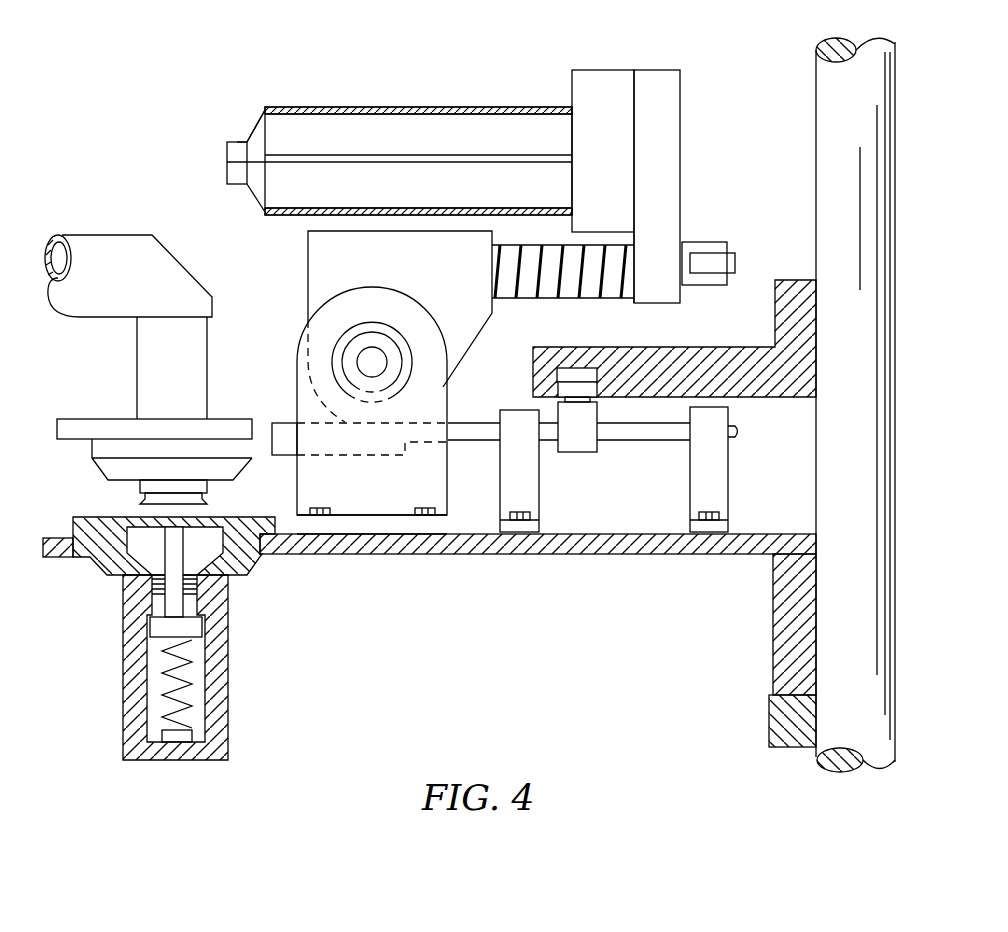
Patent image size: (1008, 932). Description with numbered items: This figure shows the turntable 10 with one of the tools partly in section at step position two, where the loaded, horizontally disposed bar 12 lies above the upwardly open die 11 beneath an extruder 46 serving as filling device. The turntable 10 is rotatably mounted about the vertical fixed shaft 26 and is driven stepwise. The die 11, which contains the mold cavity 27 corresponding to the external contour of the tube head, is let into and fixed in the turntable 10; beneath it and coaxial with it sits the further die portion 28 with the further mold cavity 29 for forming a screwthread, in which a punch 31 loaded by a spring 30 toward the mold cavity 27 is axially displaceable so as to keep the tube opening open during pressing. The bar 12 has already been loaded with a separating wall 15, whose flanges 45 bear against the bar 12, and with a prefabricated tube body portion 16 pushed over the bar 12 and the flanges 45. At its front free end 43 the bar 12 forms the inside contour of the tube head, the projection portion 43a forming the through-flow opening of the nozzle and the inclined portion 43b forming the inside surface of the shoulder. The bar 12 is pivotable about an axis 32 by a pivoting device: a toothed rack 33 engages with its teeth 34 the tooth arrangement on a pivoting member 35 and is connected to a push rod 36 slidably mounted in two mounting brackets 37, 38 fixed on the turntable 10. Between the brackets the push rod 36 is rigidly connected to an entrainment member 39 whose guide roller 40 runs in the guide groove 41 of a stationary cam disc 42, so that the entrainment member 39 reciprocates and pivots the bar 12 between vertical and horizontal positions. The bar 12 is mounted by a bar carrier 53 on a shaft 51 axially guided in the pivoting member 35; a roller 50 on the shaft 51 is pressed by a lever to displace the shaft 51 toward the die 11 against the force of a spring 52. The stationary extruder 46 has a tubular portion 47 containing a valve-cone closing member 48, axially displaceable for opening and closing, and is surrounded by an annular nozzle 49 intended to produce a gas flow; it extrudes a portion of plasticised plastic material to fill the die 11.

The turntable 10 is at (355, 540).
The die 11 is at (100, 563).
The bar 12 is at (343, 118).
The separating wall 15 is at (233, 155).
The tube body portion 16 is at (395, 108).
The vertical fixed shaft 26 is at (816, 85).
The mold cavity 27 is at (145, 563).
The further die portion 28 is at (130, 718).
The further mold cavity 29 is at (183, 588).
The spring 30 is at (170, 720).
The punch 31 is at (175, 607).
The axis 32 is at (372, 362).
The toothed rack 33 is at (345, 450).
The teeth 34 is at (280, 423).
The pivoting member 35 is at (308, 266).
The push rod 36 is at (648, 437).
The mounting bracket 37 is at (522, 530).
The mounting bracket 38 is at (712, 530).
The entrainment member 39 is at (575, 440).
The guide roller 40 is at (572, 390).
The guide groove 41 is at (590, 375).
The cam disc 42 is at (712, 350).
The front free end 43 is at (245, 205).
The projection portion 43a is at (240, 145).
The inclined portion 43b is at (258, 137).
The flanges 45 is at (487, 155).
The extruder 46 is at (80, 250).
The tubular portion 47 is at (145, 375).
The closing member 48 is at (205, 500).
The annular nozzle 49 is at (138, 487).
The roller 50 is at (730, 262).
The shaft 51 is at (626, 265).
The spring 52 is at (516, 300).
The bar carrier 53 is at (652, 75).